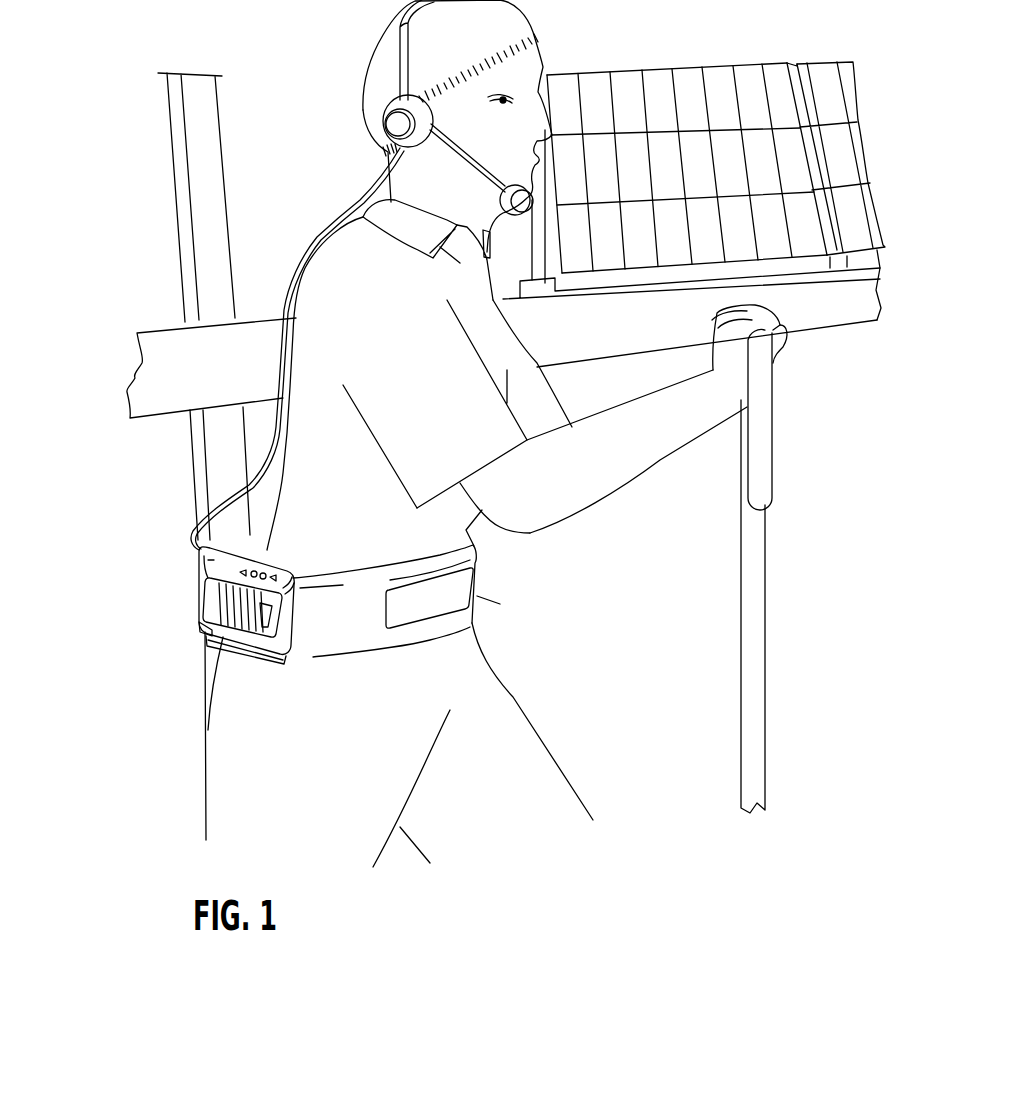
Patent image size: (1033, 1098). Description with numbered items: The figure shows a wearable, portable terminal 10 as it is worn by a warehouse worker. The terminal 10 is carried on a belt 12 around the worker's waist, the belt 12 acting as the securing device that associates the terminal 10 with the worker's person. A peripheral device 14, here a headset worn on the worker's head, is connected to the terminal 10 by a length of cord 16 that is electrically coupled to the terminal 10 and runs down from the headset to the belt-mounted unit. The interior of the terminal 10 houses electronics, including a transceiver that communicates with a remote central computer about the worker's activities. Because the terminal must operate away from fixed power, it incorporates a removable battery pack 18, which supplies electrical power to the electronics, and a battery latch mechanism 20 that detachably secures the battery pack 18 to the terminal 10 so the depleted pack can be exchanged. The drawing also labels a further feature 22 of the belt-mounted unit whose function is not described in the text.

The terminal 10 is at (308, 614).
The belt 12 is at (477, 593).
The peripheral device 14 is at (388, 110).
The cord 16 is at (280, 363).
The removable battery pack 18 is at (212, 628).
The battery latch mechanism 20 is at (263, 627).
The clip 22 is at (238, 647).